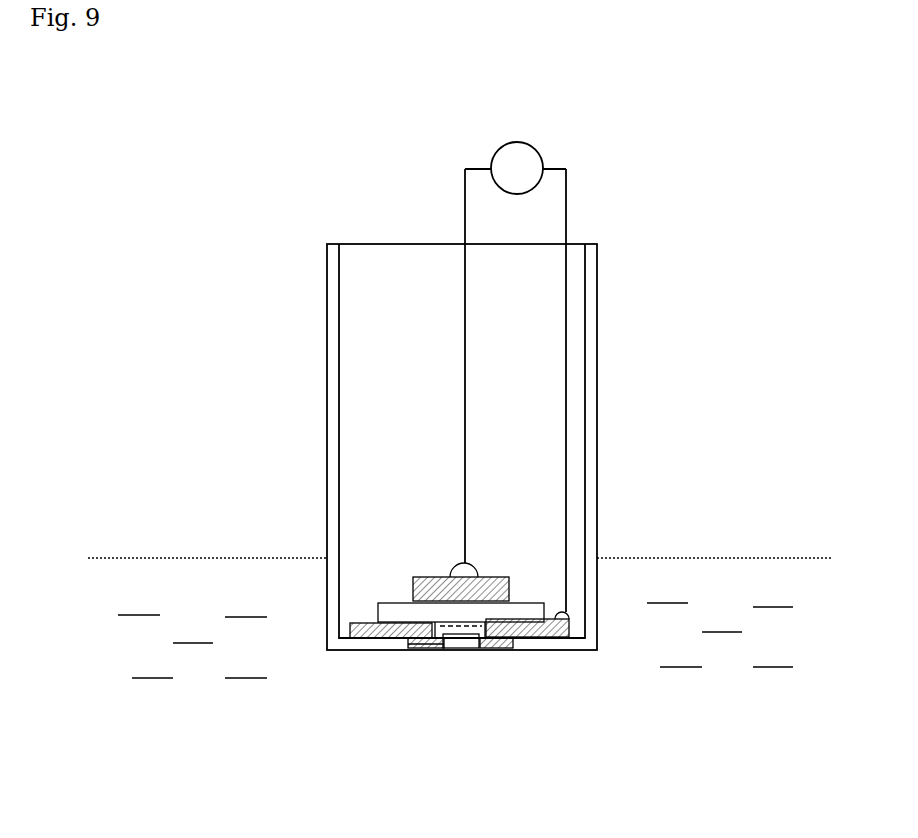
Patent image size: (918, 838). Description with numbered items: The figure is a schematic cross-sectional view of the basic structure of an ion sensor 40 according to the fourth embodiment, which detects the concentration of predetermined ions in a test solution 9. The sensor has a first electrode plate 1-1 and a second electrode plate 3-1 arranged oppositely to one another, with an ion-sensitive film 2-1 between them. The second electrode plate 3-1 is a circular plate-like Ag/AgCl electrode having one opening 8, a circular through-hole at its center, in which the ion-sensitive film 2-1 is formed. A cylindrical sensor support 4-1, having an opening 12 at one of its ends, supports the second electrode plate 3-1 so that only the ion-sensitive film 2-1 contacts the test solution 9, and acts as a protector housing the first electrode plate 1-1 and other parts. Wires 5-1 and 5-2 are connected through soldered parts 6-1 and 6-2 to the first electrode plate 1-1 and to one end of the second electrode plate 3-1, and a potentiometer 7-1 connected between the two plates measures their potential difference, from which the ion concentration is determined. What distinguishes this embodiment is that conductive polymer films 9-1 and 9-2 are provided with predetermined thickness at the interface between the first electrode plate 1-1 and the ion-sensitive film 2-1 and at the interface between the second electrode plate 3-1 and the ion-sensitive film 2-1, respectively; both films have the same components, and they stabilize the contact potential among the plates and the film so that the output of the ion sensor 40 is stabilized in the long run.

The ion sensor 40 is at (613, 250).
The sensor support 4-1 is at (592, 422).
The potentiometer 7-1 is at (542, 154).
The wire 5-1 is at (465, 385).
The wire 5-2 is at (567, 350).
The soldered part 6-1 is at (448, 573).
The first electrode plate 1-1 is at (512, 588).
The conductive polymer film 9-1 is at (540, 603).
The ion-sensitive film 2-1 is at (450, 653).
The second electrode plate 3-1 is at (340, 648).
The conductive polymer film 9-2 is at (432, 653).
The opening 12 is at (423, 655).
The opening 8 is at (483, 653).
The soldered part 6-2 is at (595, 650).
The test solution 9 is at (723, 570).